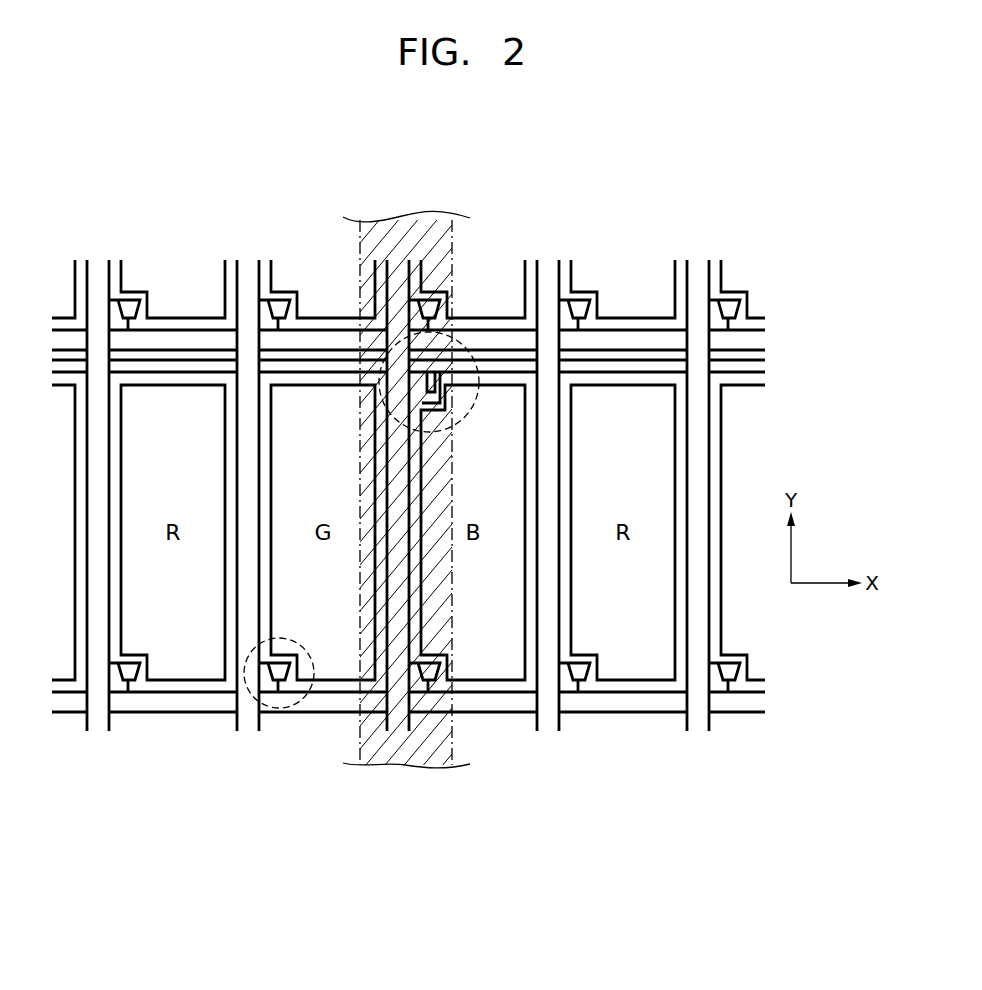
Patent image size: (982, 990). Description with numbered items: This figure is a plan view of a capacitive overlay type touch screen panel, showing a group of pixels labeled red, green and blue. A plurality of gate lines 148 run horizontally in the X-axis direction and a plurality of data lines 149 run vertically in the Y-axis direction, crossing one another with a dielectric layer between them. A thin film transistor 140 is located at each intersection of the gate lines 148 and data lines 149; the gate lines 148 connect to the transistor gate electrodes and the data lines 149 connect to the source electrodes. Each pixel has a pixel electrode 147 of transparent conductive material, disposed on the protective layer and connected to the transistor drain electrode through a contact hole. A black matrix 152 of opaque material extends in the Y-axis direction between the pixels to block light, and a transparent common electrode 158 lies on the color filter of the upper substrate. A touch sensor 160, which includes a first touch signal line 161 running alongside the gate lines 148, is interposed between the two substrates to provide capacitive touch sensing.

The thin film transistor 140 is at (292, 707).
The pixel electrode 147 is at (186, 669).
The gate line 148 is at (752, 338).
The data line 149 is at (95, 710).
The black matrix 152 is at (453, 742).
The common electrode 158 is at (643, 668).
The touch sensor 160 is at (458, 343).
The first touch signal line 161 is at (755, 365).